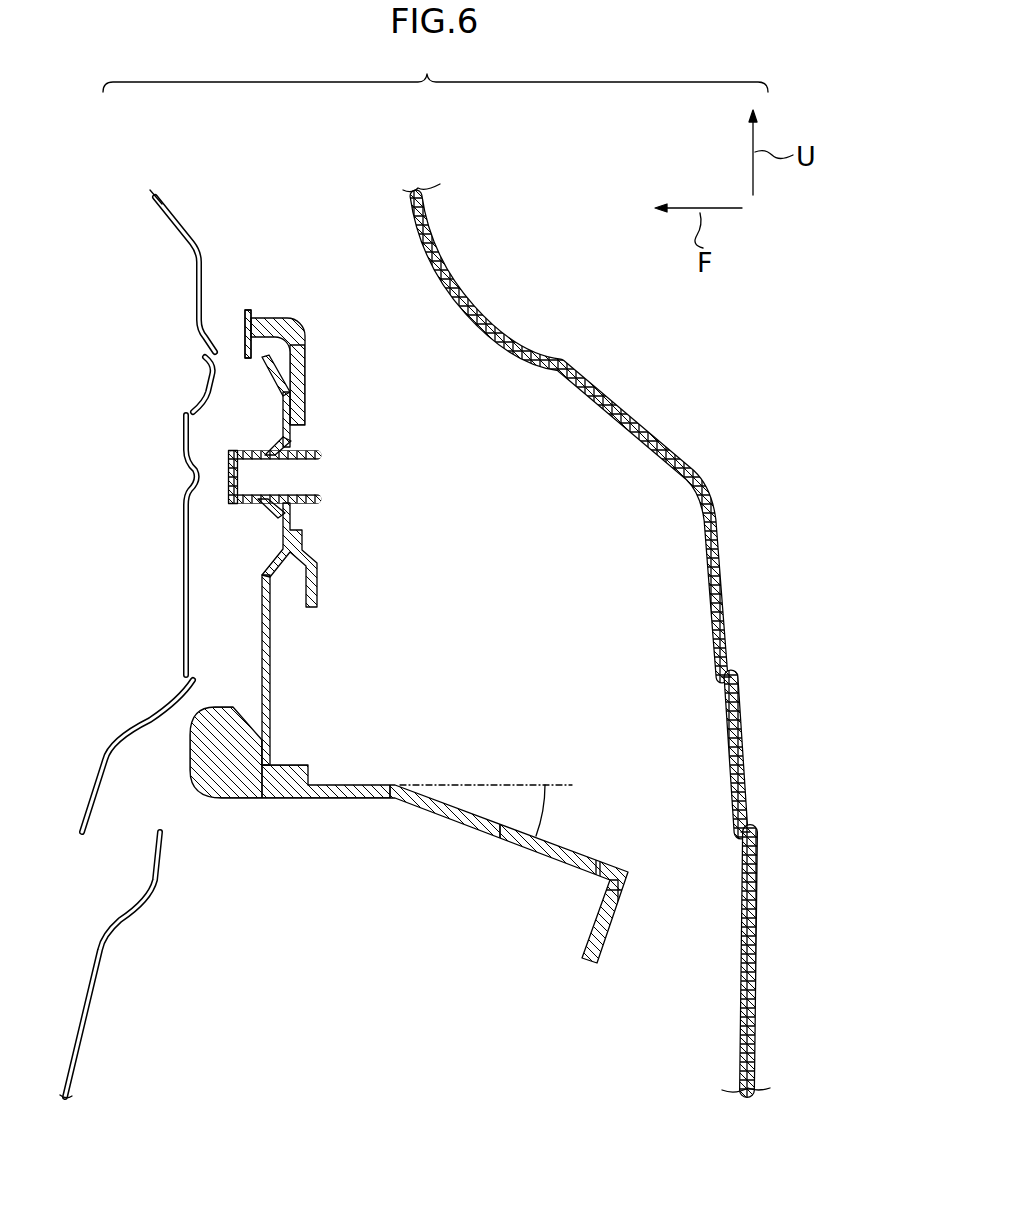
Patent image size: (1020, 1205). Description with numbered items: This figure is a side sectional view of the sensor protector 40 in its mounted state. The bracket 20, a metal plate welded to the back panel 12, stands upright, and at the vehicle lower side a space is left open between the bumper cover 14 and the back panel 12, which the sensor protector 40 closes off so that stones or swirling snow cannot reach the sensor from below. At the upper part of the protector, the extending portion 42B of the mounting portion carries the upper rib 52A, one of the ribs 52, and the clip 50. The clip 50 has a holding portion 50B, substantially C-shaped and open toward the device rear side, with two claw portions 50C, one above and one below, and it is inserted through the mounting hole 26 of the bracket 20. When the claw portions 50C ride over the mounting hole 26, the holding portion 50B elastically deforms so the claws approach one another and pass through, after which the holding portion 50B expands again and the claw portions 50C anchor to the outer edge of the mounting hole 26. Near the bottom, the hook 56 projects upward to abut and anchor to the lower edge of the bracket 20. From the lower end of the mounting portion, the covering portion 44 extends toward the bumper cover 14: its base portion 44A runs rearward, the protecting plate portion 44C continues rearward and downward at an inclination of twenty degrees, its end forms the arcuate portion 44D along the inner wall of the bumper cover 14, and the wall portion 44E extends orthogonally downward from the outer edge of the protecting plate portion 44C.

The back panel 12 is at (187, 227).
The bumper cover 14 is at (458, 267).
The bracket 20 is at (285, 664).
The mounting hole 26 is at (292, 500).
The sensor protector 40 is at (300, 312).
The extending portion 42B is at (305, 380).
The covering portion 44 is at (455, 835).
The base portion 44A is at (365, 800).
The protecting plate portion 44C is at (520, 845).
The arcuate portion 44D is at (627, 874).
The wall portion 44E is at (613, 927).
The clip 50 is at (220, 464).
The holding portion 50B is at (237, 497).
The claw portions 50C is at (268, 445).
The ribs 52 is at (260, 299).
The upper rib 52A is at (268, 318).
The hook 56 is at (228, 765).